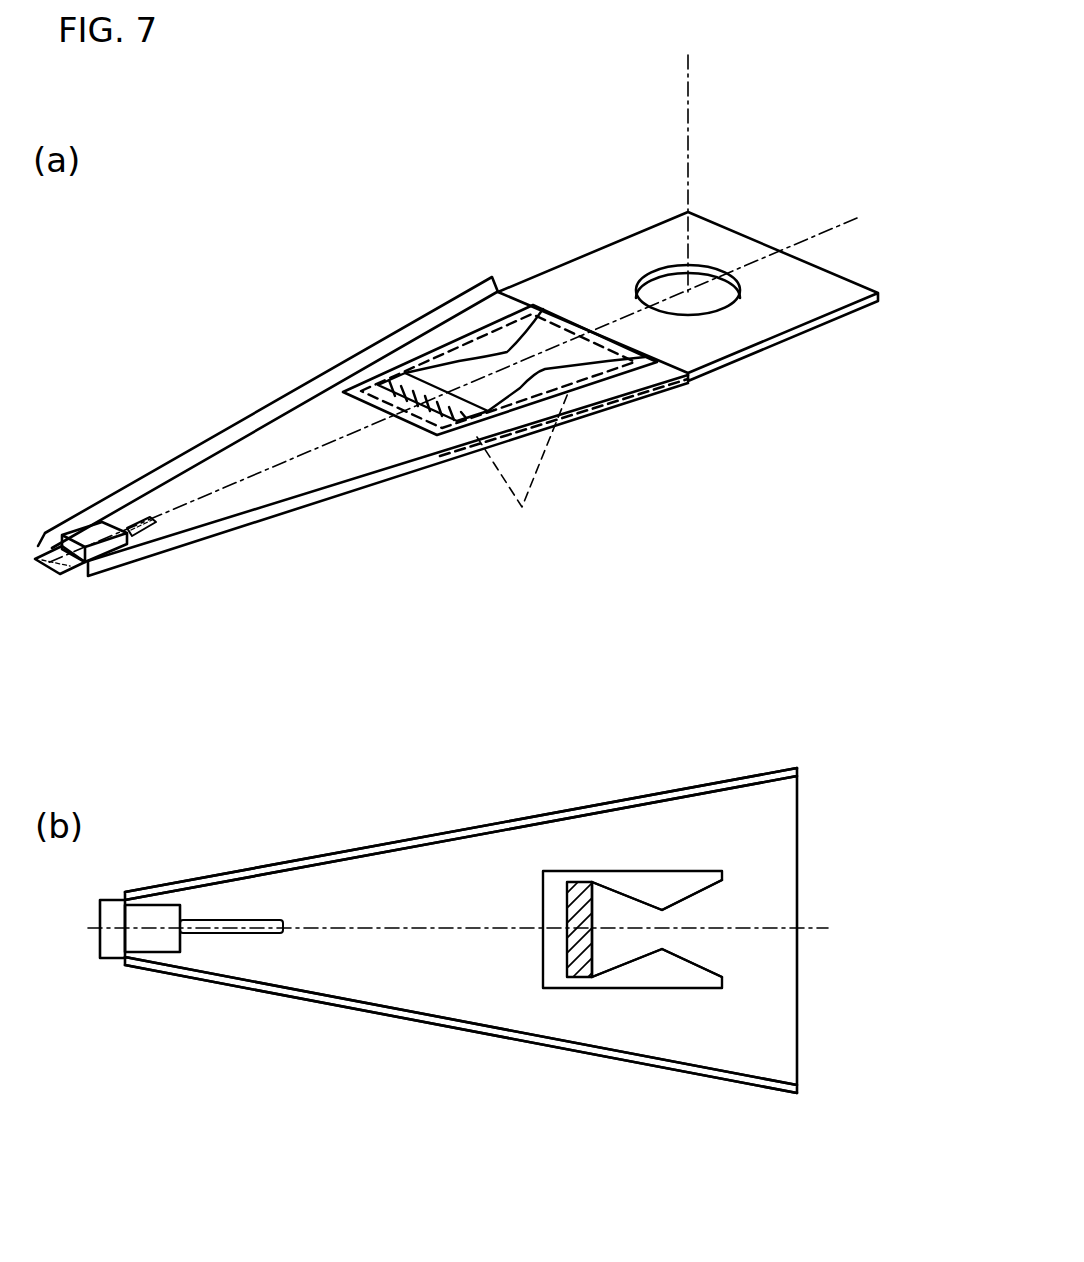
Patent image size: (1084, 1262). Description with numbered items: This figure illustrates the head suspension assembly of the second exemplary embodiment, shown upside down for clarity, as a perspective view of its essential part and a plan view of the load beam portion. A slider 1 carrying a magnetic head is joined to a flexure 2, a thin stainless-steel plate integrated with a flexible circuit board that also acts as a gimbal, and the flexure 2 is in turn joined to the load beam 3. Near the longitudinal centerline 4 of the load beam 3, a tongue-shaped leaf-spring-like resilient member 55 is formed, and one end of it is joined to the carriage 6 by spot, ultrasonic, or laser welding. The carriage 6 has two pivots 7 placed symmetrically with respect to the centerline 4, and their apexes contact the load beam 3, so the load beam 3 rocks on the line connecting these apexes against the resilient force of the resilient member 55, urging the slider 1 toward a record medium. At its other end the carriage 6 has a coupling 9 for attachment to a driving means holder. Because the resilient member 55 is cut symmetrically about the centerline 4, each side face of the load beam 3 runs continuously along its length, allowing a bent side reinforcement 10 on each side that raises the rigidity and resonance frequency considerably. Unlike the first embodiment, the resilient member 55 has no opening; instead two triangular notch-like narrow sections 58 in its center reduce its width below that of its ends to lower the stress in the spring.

The slider 1 is at (87, 537).
The flexure 2 is at (60, 573).
The load beam 3 is at (262, 457).
The longitudinal centerline 4 is at (617, 318).
The carriage 6 is at (653, 247).
The pivots 7 is at (522, 470).
The coupling 9 is at (713, 295).
The side reinforcement 10 is at (286, 860).
The leaf-spring-like resilient member 55 is at (502, 352).
The notch-like narrow sections 58 is at (462, 370).